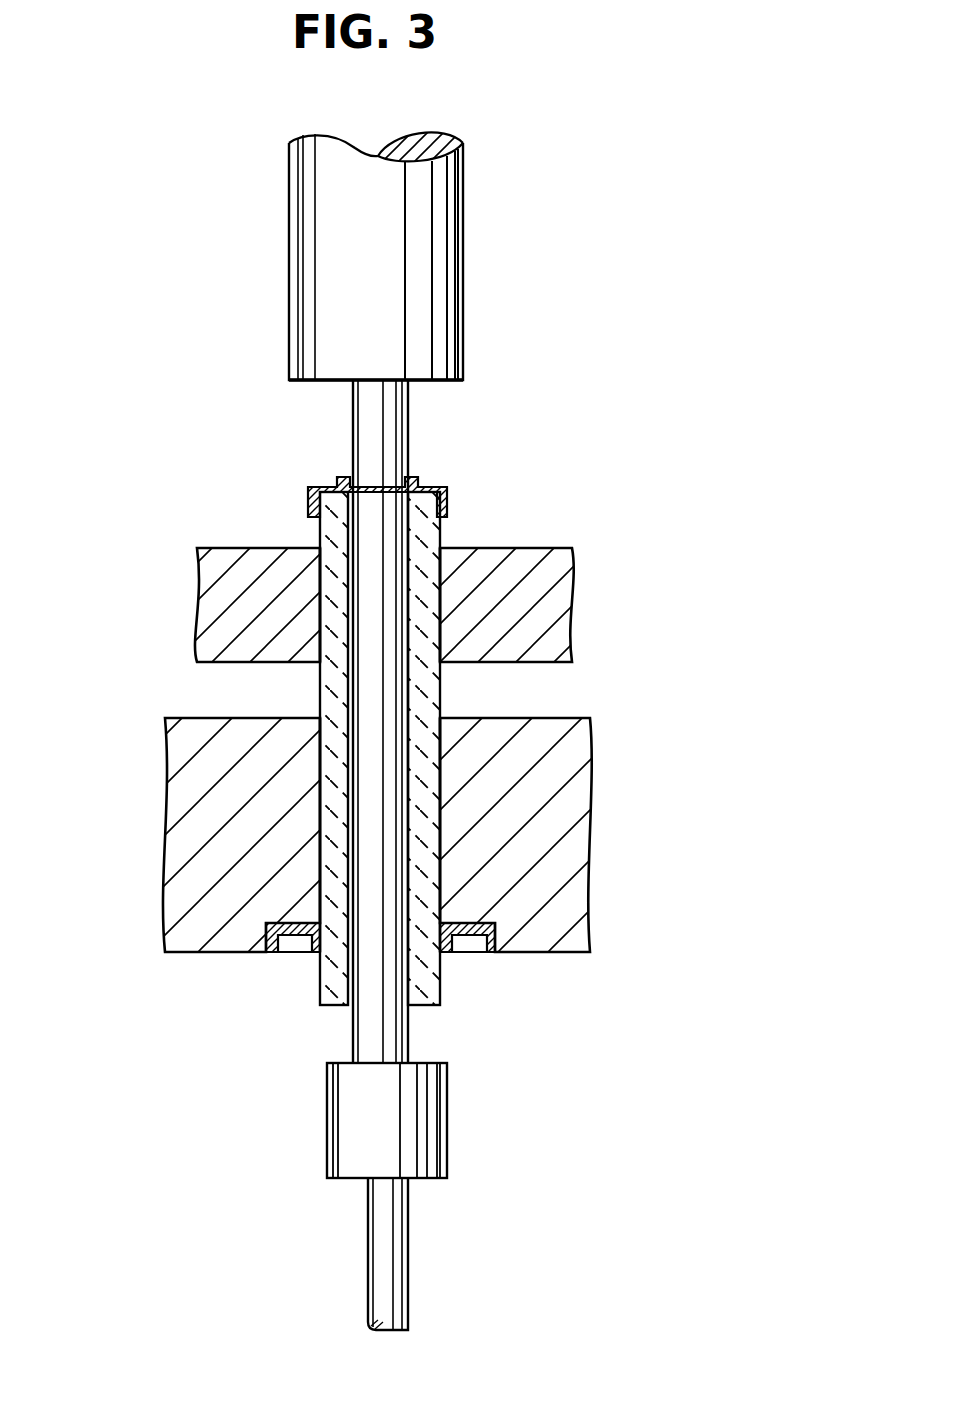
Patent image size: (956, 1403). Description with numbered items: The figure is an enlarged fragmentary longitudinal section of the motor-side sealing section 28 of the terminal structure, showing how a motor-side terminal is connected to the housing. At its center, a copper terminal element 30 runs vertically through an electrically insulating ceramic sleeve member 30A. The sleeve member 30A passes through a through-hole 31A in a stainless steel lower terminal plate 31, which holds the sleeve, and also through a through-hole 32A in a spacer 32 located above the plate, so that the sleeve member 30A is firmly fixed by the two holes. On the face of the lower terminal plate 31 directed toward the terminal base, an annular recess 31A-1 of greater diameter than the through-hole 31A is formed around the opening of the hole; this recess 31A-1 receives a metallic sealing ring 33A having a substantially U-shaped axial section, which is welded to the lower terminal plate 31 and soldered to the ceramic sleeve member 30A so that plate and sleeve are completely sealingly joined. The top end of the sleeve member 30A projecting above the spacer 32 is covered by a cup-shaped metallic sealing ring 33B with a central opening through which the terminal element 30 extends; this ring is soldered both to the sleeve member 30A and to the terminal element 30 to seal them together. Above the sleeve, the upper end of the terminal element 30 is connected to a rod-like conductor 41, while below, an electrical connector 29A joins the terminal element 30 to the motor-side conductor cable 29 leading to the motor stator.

The motor-side sealing section 28 is at (180, 547).
The motor-side conductor cable 29 is at (407, 1238).
The electrical connector 29A is at (413, 1132).
The terminal element 30 is at (413, 1038).
The sleeve member 30A is at (430, 982).
The lower terminal plate 31 is at (558, 822).
The through-hole 31A is at (330, 827).
The annular recess 31A-1 is at (293, 948).
The spacer 32 is at (542, 592).
The through-hole 32A is at (432, 646).
The metallic sealing ring 33A is at (478, 913).
The metallic sealing ring 33B is at (437, 484).
The rod-like conductor 41 is at (442, 270).